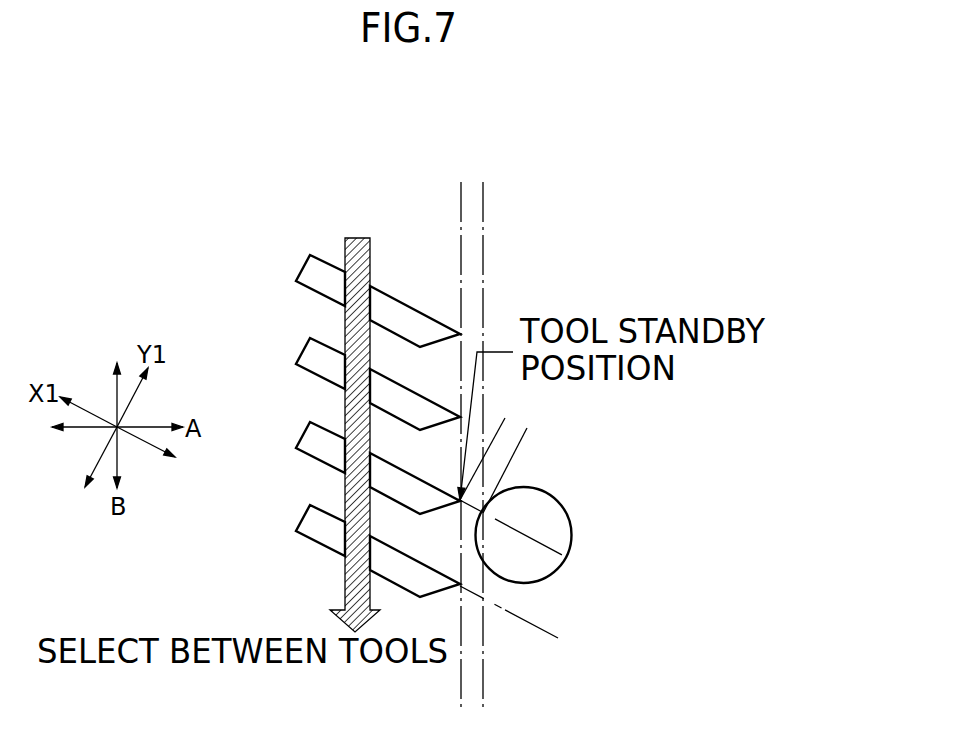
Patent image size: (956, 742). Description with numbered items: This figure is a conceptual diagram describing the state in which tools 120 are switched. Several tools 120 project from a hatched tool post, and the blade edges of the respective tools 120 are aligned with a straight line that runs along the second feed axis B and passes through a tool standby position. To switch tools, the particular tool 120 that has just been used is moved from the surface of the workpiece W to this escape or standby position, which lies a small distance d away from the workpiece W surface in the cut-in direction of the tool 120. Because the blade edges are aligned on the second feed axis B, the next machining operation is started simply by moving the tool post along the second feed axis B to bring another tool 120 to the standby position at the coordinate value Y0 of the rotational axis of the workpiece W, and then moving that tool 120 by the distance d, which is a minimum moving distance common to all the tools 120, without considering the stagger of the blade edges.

The tool 120 is at (313, 282).
The workpiece W is at (555, 515).
The Y1 coordinate value of the rotational axis of the workpiece Y0 is at (482, 513).
The distance d is at (535, 447).
The second feed axis B is at (477, 432).